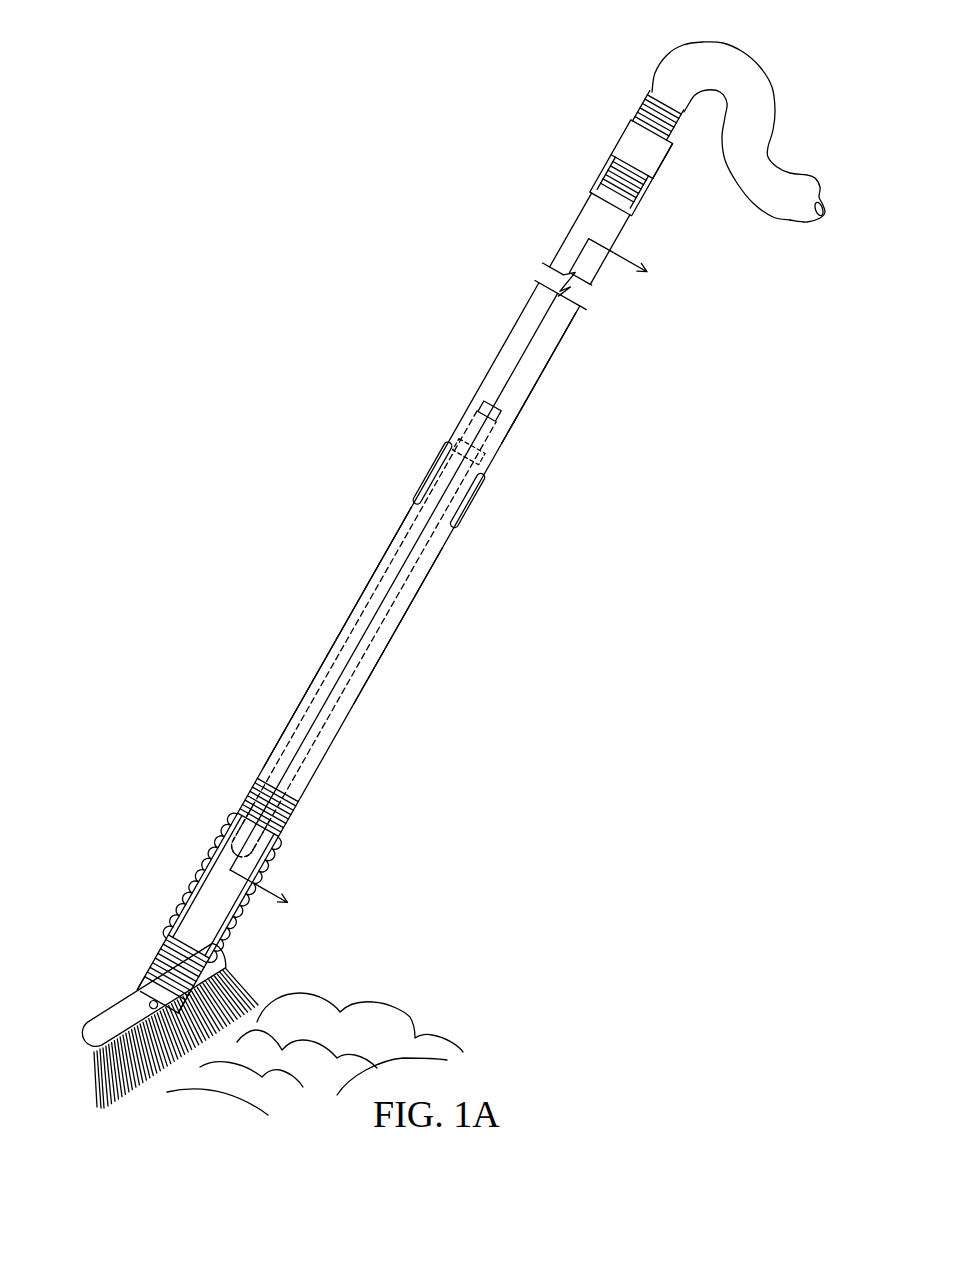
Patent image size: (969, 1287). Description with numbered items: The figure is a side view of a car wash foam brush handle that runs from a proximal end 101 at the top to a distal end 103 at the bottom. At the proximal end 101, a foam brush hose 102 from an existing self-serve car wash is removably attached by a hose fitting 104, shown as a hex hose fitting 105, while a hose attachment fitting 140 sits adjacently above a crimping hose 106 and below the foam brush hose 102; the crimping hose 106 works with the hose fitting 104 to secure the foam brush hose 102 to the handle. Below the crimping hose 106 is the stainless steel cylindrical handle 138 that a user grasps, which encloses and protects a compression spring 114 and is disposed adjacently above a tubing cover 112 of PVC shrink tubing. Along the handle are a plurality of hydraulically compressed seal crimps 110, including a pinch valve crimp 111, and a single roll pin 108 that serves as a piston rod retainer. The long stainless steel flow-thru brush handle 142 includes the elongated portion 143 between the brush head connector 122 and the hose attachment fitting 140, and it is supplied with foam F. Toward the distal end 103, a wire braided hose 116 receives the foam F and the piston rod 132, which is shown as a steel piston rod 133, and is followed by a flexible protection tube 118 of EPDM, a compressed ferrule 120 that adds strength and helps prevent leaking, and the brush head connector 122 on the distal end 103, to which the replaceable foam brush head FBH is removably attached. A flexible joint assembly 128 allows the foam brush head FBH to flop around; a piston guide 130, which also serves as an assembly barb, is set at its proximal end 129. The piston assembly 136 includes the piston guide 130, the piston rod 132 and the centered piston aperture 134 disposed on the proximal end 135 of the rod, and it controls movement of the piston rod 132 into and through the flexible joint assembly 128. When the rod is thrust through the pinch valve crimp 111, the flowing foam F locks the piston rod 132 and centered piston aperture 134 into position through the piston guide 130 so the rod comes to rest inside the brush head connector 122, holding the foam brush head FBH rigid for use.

The proximal end 101 is at (647, 100).
The foam brush hose 102 is at (757, 57).
The distal end 103 is at (130, 1007).
The hose fitting 104 is at (575, 149).
The hex hose fitting 105 is at (617, 150).
The crimping hose 106 is at (597, 183).
The single roll pin 108 is at (488, 405).
The seal crimps 110 is at (623, 233).
The pinch valve crimp 111 is at (467, 505).
The tubing cover 112 is at (427, 480).
The compression spring 114 is at (338, 633).
The wire braided hose 116 is at (278, 790).
The flexible protection tube 118 is at (229, 887).
The compressed ferrule 120 is at (158, 943).
The brush head connector 122 is at (137, 980).
The flexible joint assembly 128 is at (207, 847).
The proximal end 129 is at (278, 823).
The piston guide 130 is at (256, 788).
The piston rod 132 is at (393, 580).
The steel piston rod 133 is at (331, 700).
The centered piston aperture 134 is at (507, 437).
The proximal end 135 is at (510, 432).
The piston assembly 136 is at (513, 420).
The cylindrical handle 138 is at (549, 362).
The hose attachment fitting 140 is at (665, 160).
The brush handle 142 is at (478, 626).
The elongated portion 143 is at (432, 610).
The foam brush head FBH is at (221, 953).
The foam F is at (410, 1020).